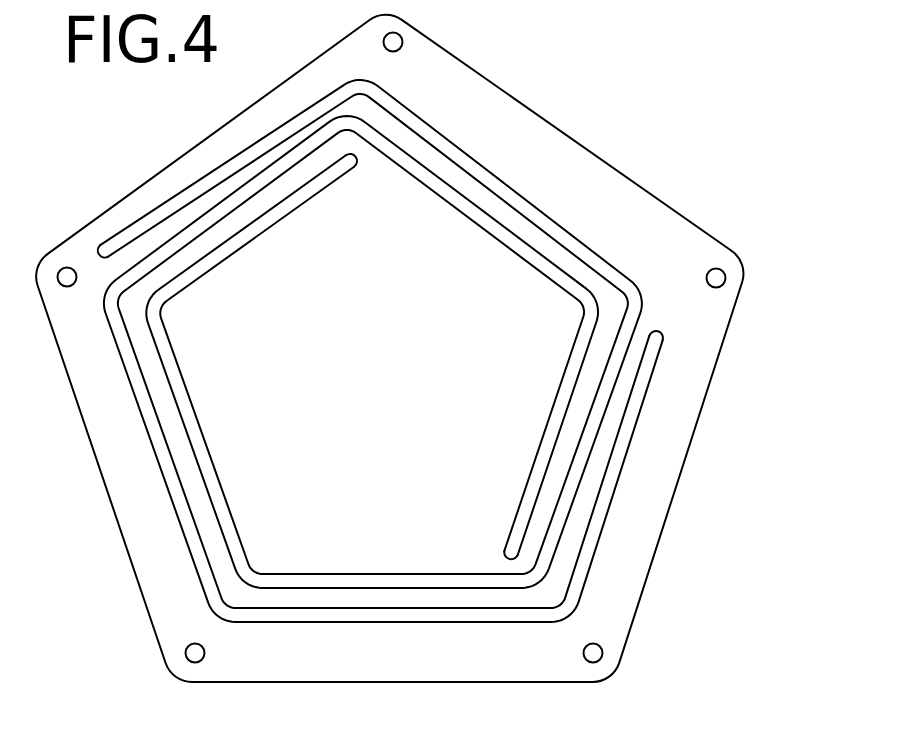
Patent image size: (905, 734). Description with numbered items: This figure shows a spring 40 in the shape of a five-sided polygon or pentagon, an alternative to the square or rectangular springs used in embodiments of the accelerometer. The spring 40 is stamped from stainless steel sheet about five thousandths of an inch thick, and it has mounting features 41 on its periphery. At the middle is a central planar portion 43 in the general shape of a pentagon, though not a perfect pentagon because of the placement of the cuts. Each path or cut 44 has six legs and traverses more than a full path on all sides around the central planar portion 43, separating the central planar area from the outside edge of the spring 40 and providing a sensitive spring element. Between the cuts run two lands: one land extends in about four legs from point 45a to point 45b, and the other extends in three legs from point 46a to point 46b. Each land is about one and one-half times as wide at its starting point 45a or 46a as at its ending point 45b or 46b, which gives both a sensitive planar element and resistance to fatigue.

The spring 40 is at (578, 142).
The mounting features 41 is at (724, 268).
The central planar portion 43 is at (415, 367).
The path or cut 44 is at (536, 256).
The point 45a is at (326, 162).
The point 45b is at (643, 347).
The point 46a is at (531, 549).
The point 46b is at (126, 261).